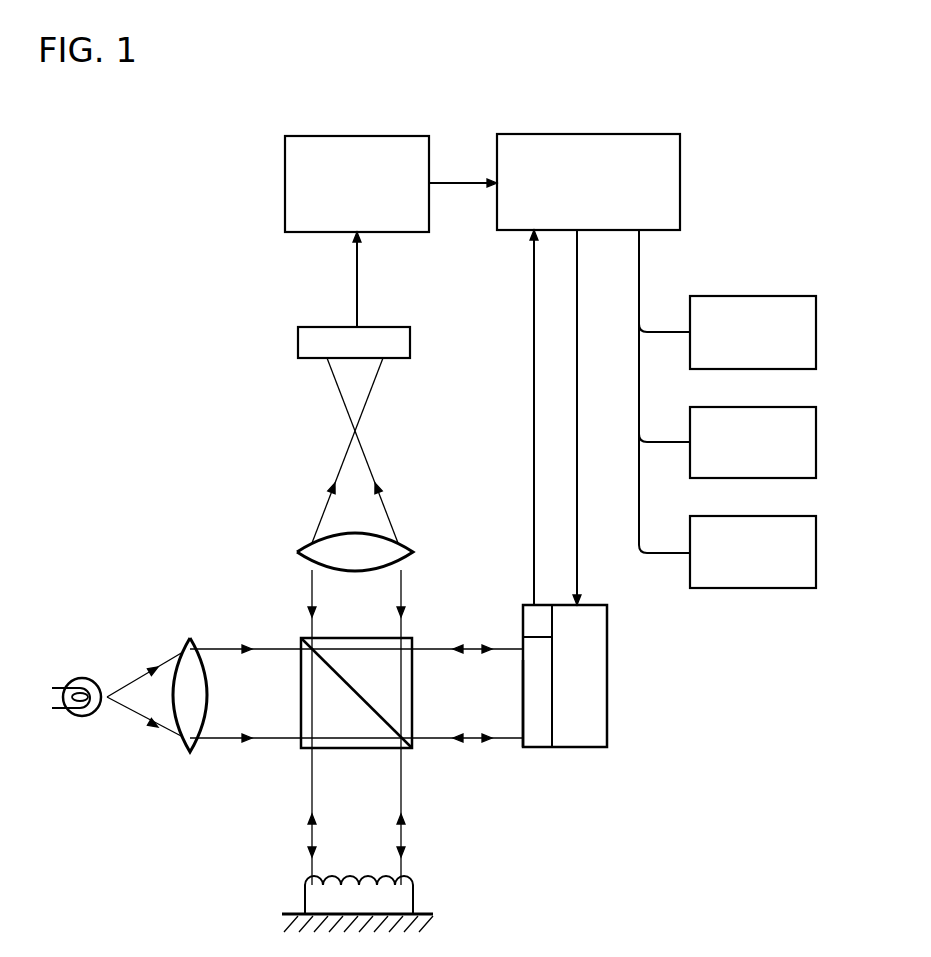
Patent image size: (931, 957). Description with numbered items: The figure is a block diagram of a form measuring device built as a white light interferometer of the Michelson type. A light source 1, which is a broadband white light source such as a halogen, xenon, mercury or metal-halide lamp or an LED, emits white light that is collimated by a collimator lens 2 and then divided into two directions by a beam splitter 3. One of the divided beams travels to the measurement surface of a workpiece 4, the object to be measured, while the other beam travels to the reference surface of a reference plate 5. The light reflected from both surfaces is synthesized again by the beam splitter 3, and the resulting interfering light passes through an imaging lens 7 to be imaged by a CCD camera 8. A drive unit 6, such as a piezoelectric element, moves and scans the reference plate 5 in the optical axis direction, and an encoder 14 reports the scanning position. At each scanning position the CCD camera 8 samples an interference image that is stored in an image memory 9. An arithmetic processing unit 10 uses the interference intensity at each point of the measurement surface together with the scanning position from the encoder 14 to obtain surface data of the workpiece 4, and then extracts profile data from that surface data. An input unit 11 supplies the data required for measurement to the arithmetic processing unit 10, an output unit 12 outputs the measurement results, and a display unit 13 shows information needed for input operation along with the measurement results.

The light source 1 is at (82, 678).
The collimator lens 2 is at (190, 638).
The beam splitter 3 is at (301, 692).
The workpiece 4 is at (413, 903).
The reference plate 5 is at (537, 748).
The drive unit 6 is at (607, 680).
The imaging lens 7 is at (297, 552).
The CCD camera 8 is at (298, 342).
The image memory 9 is at (285, 186).
The arithmetic processing unit 10 is at (680, 184).
The input unit 11 is at (816, 334).
The output unit 12 is at (816, 444).
The display unit 13 is at (816, 554).
The encoder 14 is at (523, 626).